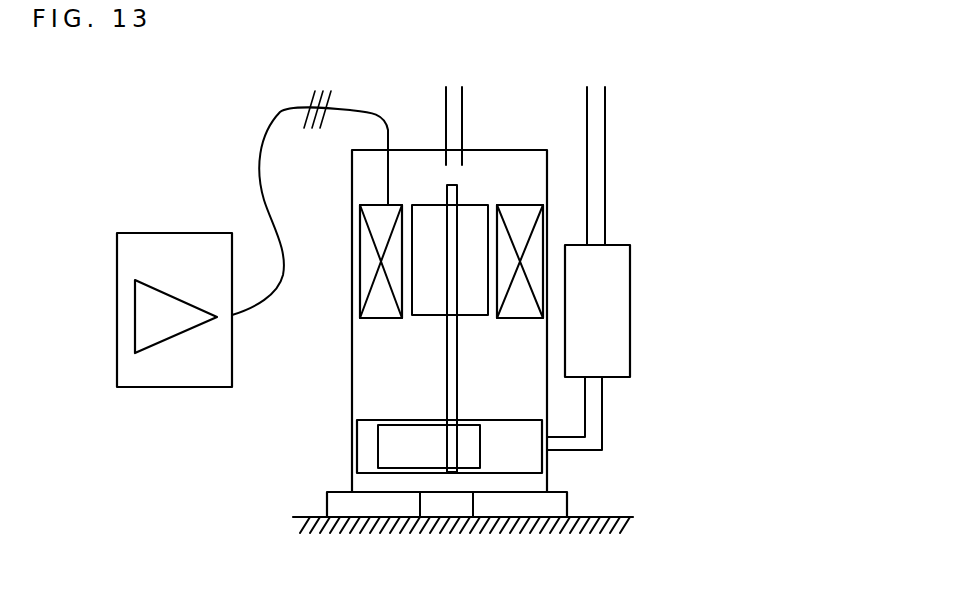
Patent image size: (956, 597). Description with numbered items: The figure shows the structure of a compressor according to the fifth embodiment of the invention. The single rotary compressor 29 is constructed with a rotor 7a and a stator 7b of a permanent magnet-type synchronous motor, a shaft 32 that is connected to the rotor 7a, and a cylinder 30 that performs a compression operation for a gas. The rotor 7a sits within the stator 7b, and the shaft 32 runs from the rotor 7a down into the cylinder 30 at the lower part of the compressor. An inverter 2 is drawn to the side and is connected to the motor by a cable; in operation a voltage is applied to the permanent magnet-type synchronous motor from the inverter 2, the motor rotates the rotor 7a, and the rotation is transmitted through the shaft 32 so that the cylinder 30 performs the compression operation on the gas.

The inverter 2 is at (235, 285).
The rotor 7a is at (472, 212).
The stator 7b is at (518, 222).
The single rotary compressor 29 is at (530, 381).
The cylinder 30 is at (363, 443).
The shaft 32 is at (448, 372).